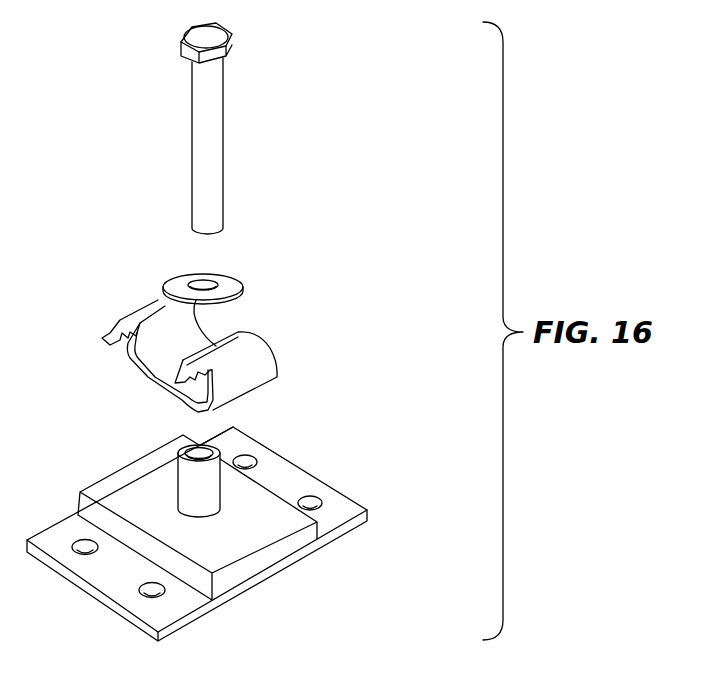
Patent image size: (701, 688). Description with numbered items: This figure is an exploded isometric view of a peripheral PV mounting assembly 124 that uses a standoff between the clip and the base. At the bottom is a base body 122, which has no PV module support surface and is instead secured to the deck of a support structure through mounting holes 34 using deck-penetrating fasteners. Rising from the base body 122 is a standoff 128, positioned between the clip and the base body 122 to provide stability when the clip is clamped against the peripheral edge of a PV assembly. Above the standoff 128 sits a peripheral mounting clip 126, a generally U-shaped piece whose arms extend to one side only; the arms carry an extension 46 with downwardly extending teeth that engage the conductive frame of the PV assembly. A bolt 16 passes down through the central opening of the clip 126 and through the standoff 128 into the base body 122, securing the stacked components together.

The peripheral PV mounting assembly 124 is at (390, 145).
The bolt 16 is at (212, 108).
The peripheral mounting clip 126 is at (285, 333).
The extension 46 is at (120, 312).
The base body 122 is at (298, 585).
The mounting hole 34 is at (312, 497).
The standoff 128 is at (193, 485).